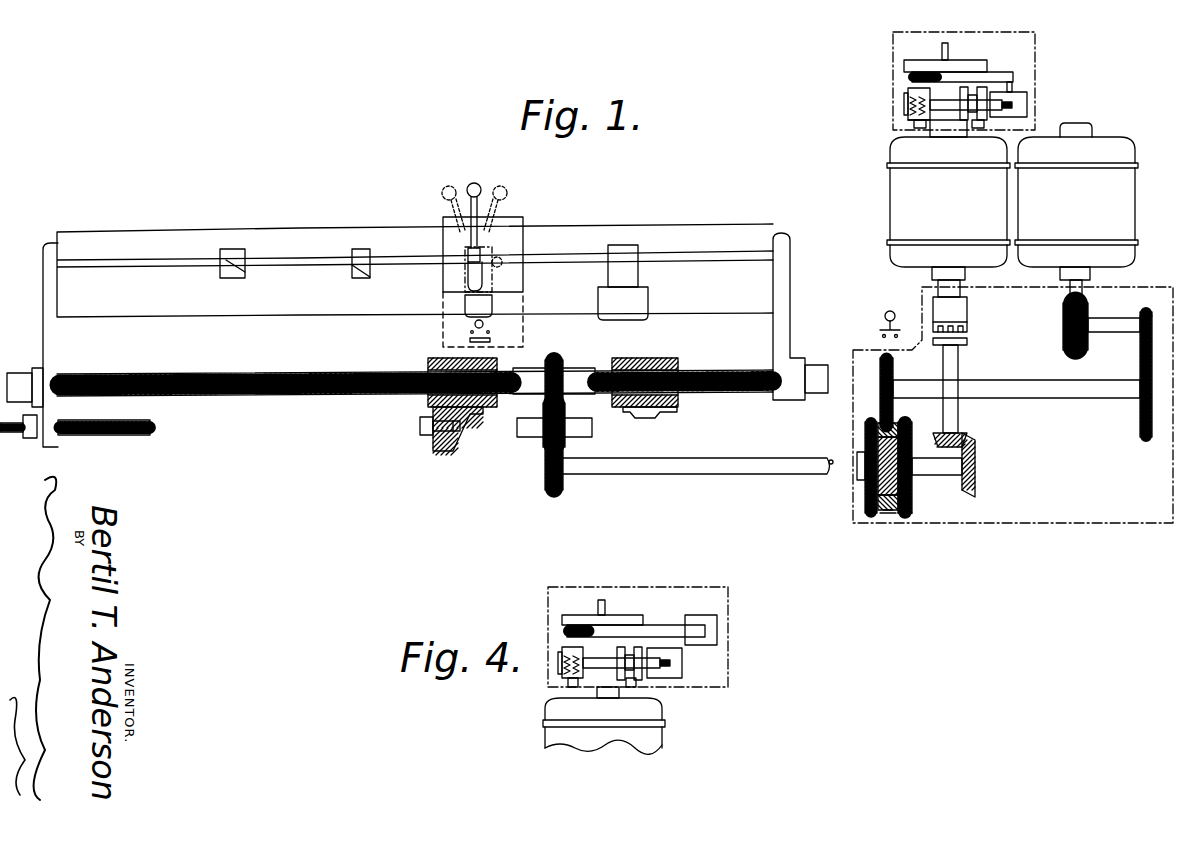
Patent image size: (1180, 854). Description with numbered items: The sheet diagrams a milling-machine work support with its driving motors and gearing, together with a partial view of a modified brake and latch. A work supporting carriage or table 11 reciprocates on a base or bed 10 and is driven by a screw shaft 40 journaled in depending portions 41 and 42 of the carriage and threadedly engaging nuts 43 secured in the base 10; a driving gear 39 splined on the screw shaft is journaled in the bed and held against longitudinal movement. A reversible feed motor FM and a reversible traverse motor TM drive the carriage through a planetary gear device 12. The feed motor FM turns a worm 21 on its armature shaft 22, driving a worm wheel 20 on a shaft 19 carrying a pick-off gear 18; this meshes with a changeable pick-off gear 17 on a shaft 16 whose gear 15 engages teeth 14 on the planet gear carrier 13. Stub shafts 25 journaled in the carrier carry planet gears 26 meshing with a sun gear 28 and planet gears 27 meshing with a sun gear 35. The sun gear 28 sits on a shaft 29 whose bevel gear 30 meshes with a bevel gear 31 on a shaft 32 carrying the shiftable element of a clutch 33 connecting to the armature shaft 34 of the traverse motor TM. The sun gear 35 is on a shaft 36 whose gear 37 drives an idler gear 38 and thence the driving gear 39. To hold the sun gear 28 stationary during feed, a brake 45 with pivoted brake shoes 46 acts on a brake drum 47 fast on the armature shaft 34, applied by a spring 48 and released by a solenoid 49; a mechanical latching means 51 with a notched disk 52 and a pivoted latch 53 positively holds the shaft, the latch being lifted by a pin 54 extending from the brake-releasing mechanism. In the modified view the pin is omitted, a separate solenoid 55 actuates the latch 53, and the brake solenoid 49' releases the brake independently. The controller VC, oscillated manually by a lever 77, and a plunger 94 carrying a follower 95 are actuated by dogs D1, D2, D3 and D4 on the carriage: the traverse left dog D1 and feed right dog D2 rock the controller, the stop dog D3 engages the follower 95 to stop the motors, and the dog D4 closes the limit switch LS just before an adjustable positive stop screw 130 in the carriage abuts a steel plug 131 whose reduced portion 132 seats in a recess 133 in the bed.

In FIG. 1, the base or bed 10 is at (466, 415).
In FIG. 1, the work supporting carriage or table 11 is at (312, 316).
In FIG. 1, the planetary gear device 12 is at (915, 515).
In FIG. 1, the planet gear carrier 13 is at (896, 516).
In FIG. 1, the teeth 14 is at (890, 515).
In FIG. 1, the gear 15 is at (895, 358).
In FIG. 1, the shaft 16 is at (1034, 390).
In FIG. 1, the pick-off gear 17 is at (1140, 425).
In FIG. 1, the pick-off gear 18 is at (1147, 314).
In FIG. 1, the shaft 19 is at (1110, 325).
In FIG. 1, the worm wheel 20 is at (1080, 352).
In FIG. 1, the worm 21 is at (1063, 336).
In FIG. 1, the armature shaft 22 is at (1082, 297).
In FIG. 1, the stub shafts 25 is at (900, 432).
In FIG. 1, the planet gear 26 is at (900, 440).
In FIG. 1, the planet gear 27 is at (866, 425).
In FIG. 1, the sun gear 28 is at (910, 470).
In FIG. 1, the shaft 29 is at (950, 480).
In FIG. 1, the bevel gear 30 is at (977, 475).
In FIG. 1, the bevel gear 31 is at (963, 436).
In FIG. 1, the shaft 32 is at (957, 368).
In FIG. 1, the clutch 33 is at (968, 316).
In FIG. 1, the armature shaft 34 is at (958, 290).
In FIG. 1, the sun gear 35 is at (866, 452).
In FIG. 1, the shaft 36 is at (760, 462).
In FIG. 1, the gear 37 is at (556, 490).
In FIG. 1, the idler gear 38 is at (566, 443).
In FIG. 1, the driving gear 39 is at (557, 362).
In FIG. 1, the screw shaft 40 is at (223, 378).
In FIG. 1, the depending portion 41 is at (46, 332).
In FIG. 1, the depending portion 42 is at (778, 335).
In FIG. 1, the nuts 43 is at (429, 361).
In FIG. 1, the brake 45 is at (908, 126).
In FIG. 1, the brake shoes 46 is at (907, 98).
In FIG. 4, the brake shoes 46 is at (641, 682).
In FIG. 1, the brake drum 47 is at (937, 128).
In FIG. 4, the brake drum 47 is at (600, 686).
In FIG. 1, the spring 48 is at (905, 117).
In FIG. 1, the solenoid 49 is at (1033, 102).
In FIG. 4, the switch block 49' is at (712, 663).
In FIG. 1, the mechanical latching means 51 is at (952, 60).
In FIG. 1, the notched disk 52 is at (910, 78).
In FIG. 4, the notched disk 52 is at (566, 632).
In FIG. 1, the pivoted latch 53 is at (995, 72).
In FIG. 4, the pivoted latch 53 is at (664, 625).
In FIG. 1, the pin 54 is at (1014, 78).
In FIG. 4, the separate solenoid 55 is at (718, 620).
In FIG. 1, the lever 77 is at (487, 200).
In FIG. 1, the plunger 94 is at (492, 340).
In FIG. 1, the follower 95 is at (484, 325).
In FIG. 1, the positive stop screw 130 is at (108, 436).
In FIG. 1, the steel plug 131 is at (421, 432).
In FIG. 1, the reduced portion 132 is at (450, 452).
In FIG. 1, the recess 133 is at (457, 438).
In FIG. 1, the traverse left dog D1 is at (234, 278).
In FIG. 1, the feed right dog D2 is at (360, 278).
In FIG. 1, the stop dog D3 is at (493, 302).
In FIG. 1, the dog D4 is at (640, 277).
In FIG. 1, the valve control VC is at (446, 279).
In FIG. 1, the limit switch LS is at (885, 321).
In FIG. 1, the traverse motor TM is at (898, 193).
In FIG. 4, the traverse motor TM is at (547, 740).
In FIG. 1, the feed motor FM is at (1120, 200).